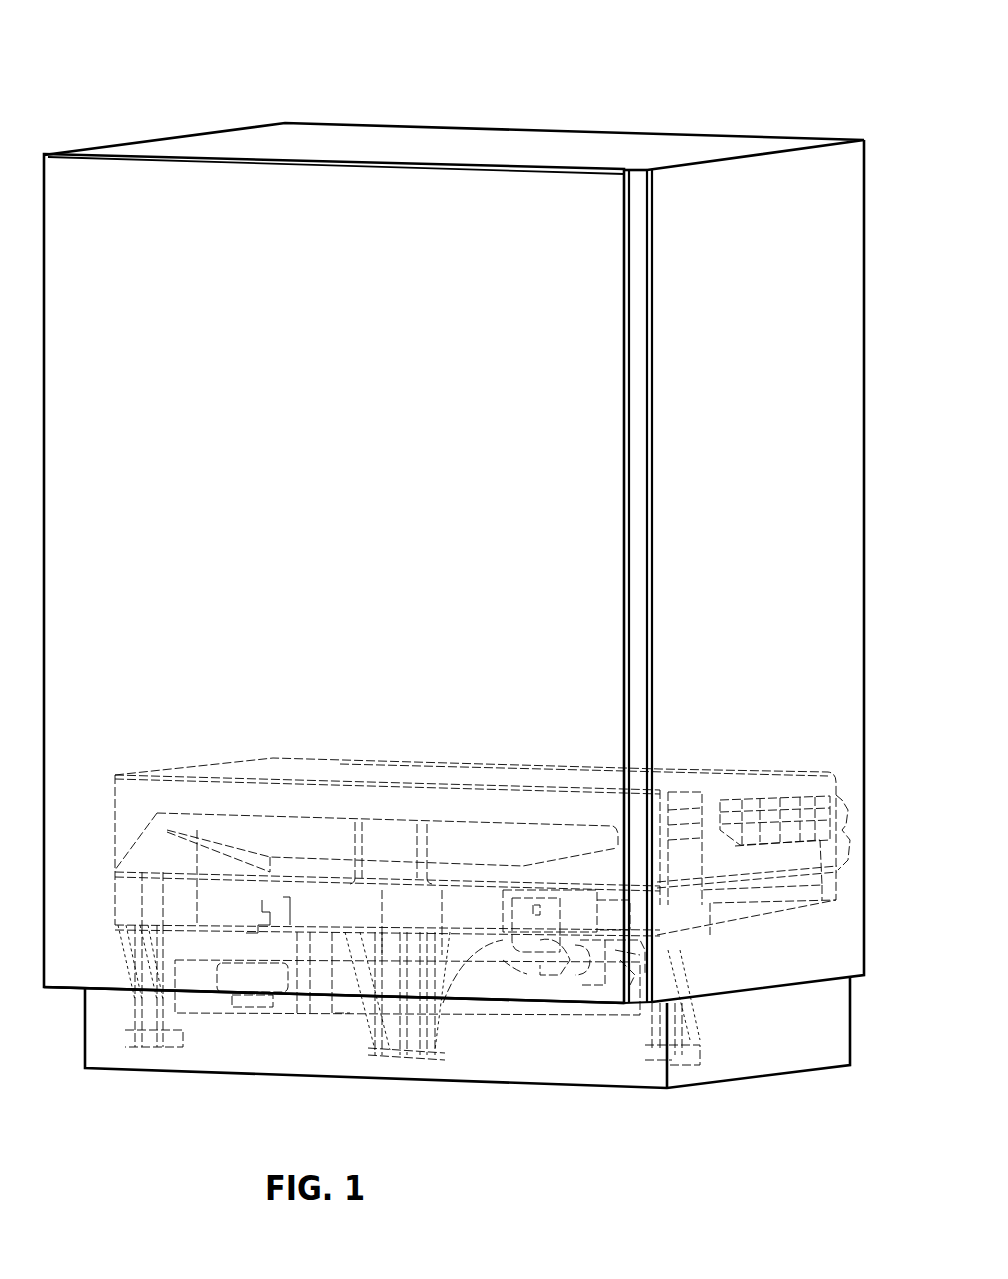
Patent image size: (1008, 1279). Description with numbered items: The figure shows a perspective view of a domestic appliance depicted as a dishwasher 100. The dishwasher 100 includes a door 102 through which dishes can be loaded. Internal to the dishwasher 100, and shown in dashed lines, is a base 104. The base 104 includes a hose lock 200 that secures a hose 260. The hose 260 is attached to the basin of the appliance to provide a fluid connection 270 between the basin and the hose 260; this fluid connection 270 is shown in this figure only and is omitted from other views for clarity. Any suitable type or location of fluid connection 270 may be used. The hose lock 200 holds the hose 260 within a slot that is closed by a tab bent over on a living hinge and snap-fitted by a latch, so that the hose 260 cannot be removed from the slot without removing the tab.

The dishwasher 100 is at (616, 147).
The door 102 is at (127, 190).
The base 104 is at (140, 1013).
The hose lock 200 is at (584, 1005).
The hose 260 is at (642, 1005).
The fluid connection 270 is at (518, 1010).